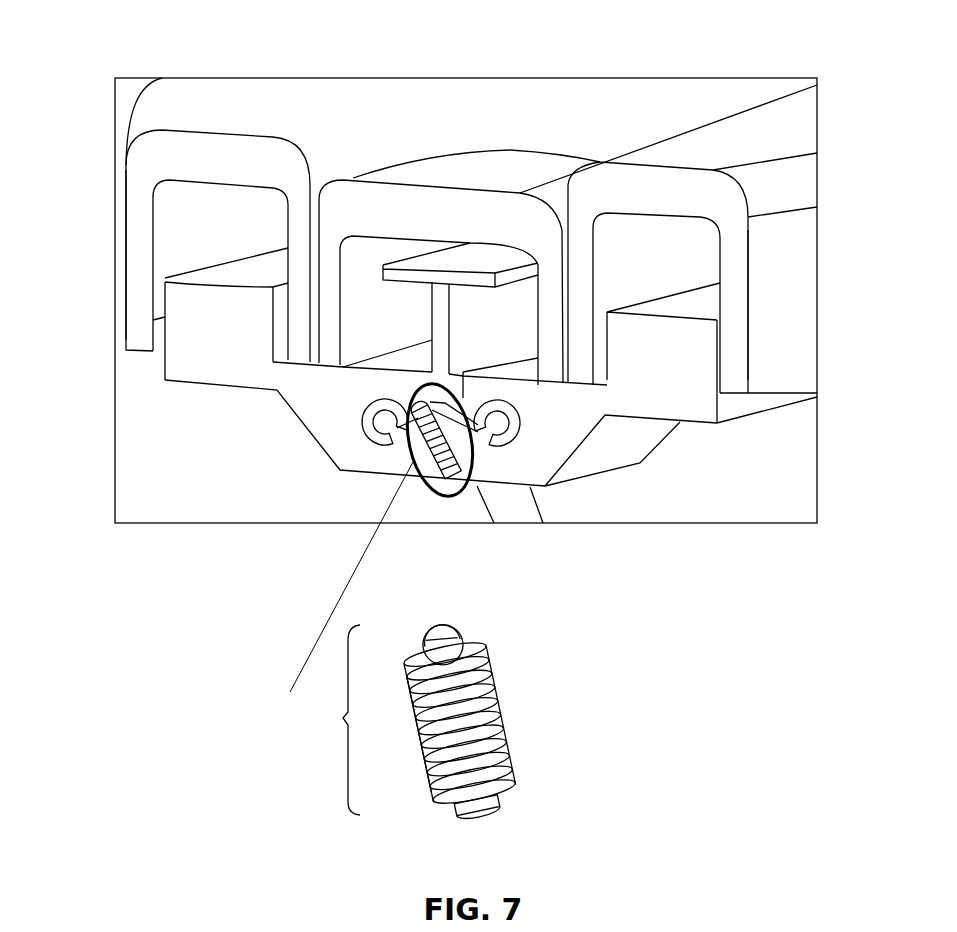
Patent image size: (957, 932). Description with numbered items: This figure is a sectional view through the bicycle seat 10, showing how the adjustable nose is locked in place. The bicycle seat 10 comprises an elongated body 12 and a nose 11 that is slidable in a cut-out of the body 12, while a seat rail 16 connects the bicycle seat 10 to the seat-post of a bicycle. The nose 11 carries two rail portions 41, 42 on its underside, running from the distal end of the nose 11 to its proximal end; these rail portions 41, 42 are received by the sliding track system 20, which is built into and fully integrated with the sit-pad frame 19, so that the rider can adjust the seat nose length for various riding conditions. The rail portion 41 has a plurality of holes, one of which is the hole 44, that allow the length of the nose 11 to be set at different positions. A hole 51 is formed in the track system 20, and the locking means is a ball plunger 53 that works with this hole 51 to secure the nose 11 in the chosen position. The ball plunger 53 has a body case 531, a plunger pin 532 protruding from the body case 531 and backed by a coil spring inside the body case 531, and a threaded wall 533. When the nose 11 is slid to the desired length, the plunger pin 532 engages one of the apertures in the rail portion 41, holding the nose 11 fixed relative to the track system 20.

The bicycle seat 10 is at (473, 100).
The nose 11 is at (520, 193).
The elongated body 12 is at (130, 223).
The seat rail 16 is at (522, 506).
The sit-pad frame 19 is at (682, 393).
The sliding track system 20 is at (297, 395).
The rail portion 41 is at (385, 427).
The rail portion 42 is at (493, 433).
The hole 44 is at (422, 380).
The hole 51 is at (458, 478).
The ball plunger 53 is at (405, 602).
The body case 531 is at (510, 802).
The plunger pin 532 is at (443, 631).
The threaded wall 533 is at (507, 725).